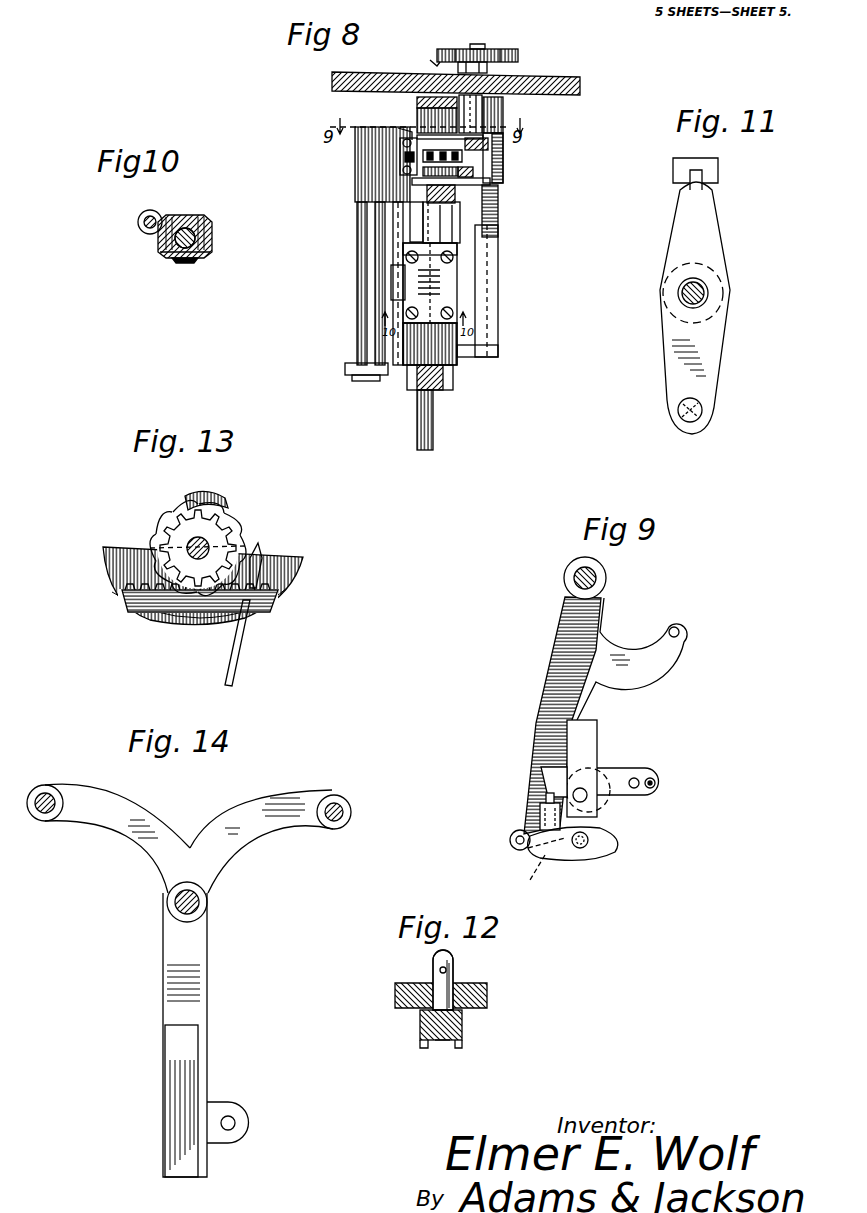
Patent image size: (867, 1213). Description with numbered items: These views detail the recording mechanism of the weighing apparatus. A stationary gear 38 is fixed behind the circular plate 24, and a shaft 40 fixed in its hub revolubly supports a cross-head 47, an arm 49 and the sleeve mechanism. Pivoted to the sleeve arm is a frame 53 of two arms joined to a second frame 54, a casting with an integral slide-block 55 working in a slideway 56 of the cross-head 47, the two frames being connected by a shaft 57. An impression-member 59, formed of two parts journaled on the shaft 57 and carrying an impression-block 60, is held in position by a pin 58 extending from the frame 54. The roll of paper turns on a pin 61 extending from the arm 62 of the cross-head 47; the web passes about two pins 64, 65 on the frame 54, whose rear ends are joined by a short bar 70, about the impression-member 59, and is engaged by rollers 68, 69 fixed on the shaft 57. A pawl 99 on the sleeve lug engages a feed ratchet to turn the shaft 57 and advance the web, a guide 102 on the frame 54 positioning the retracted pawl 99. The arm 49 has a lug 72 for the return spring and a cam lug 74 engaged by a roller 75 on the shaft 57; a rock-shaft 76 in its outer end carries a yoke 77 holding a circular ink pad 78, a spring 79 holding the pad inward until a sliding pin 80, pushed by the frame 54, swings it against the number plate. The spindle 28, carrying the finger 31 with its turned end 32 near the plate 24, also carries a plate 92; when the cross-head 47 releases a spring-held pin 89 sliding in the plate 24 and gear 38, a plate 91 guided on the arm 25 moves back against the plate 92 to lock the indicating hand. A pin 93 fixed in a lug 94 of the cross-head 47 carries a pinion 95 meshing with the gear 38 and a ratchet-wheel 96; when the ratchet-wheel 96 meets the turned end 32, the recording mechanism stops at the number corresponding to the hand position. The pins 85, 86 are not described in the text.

In FIG. 13, the circular plate 24 is at (285, 562).
In FIG. 11, the arm 25 is at (712, 177).
In FIG. 11, the spindle 28 is at (708, 293).
In FIG. 13, the finger 31 is at (233, 655).
In FIG. 13, the turned end 32 is at (258, 546).
In FIG. 8, the stationary gear 38 is at (581, 88).
In FIG. 13, the stationary gear 38 is at (160, 608).
In FIG. 9, the shaft 40 is at (600, 577).
In FIG. 14, the shaft 40 is at (207, 902).
In FIG. 8, the cross-head 47 is at (457, 134).
In FIG. 14, the cross-head 47 is at (207, 940).
In FIG. 12, the cross-head 47 is at (462, 1036).
In FIG. 8, the arm 49 is at (503, 165).
In FIG. 9, the arm 49 is at (536, 737).
In FIG. 8, the frame 53 is at (495, 395).
In FIG. 8, the frame 54 is at (548, 195).
In FIG. 9, the frame 54 is at (620, 768).
In FIG. 8, the slide-block 55 is at (417, 114).
In FIG. 9, the slide-block 55 is at (597, 735).
In FIG. 14, the slideway 56 is at (198, 1160).
In FIG. 12, the slideway 56 is at (440, 1048).
In FIG. 8, the shaft 57 is at (433, 420).
In FIG. 10, the shaft 57 is at (212, 240).
In FIG. 9, the shaft 57 is at (586, 797).
In FIG. 8, the pin 58 is at (393, 252).
In FIG. 10, the pin 58 is at (147, 230).
In FIG. 8, the impression-member 59 is at (457, 290).
In FIG. 10, the impression-member 59 is at (200, 256).
In FIG. 10, the impression-block 60 is at (185, 263).
In FIG. 14, the pin 61 is at (48, 798).
In FIG. 14, the arm 62 is at (100, 820).
In FIG. 8, the pin 64 is at (357, 333).
In FIG. 9, the pin 64 is at (656, 781).
In FIG. 8, the pin 65 is at (375, 292).
In FIG. 9, the pin 65 is at (638, 780).
In FIG. 8, the roller 68 is at (457, 250).
In FIG. 10, the roller 68 is at (185, 215).
In FIG. 8, the roller 69 is at (457, 363).
In FIG. 8, the short bar 70 is at (368, 375).
In FIG. 9, the lug 72 is at (636, 655).
In FIG. 9, the cam lug 74 is at (605, 855).
In FIG. 8, the roller 75 is at (478, 120).
In FIG. 9, the roller 75 is at (600, 808).
In FIG. 8, the rock-shaft 76 is at (498, 327).
In FIG. 9, the rock-shaft 76 is at (510, 838).
In FIG. 8, the yoke 77 is at (497, 345).
In FIG. 9, the yoke 77 is at (529, 877).
In FIG. 9, the ink pad 78 is at (580, 850).
In FIG. 8, the spring 79 is at (530, 242).
In FIG. 9, the spring 79 is at (530, 848).
In FIG. 9, the pin 80 is at (545, 805).
In FIG. 14, the pivot 85 is at (337, 806).
In FIG. 14, the arm 86 is at (250, 832).
In FIG. 12, the pin 89 is at (453, 975).
In FIG. 8, the plate 91 is at (475, 130).
In FIG. 11, the plate 91 is at (720, 350).
In FIG. 11, the plate 92 is at (705, 265).
In FIG. 8, the pin 93 is at (478, 44).
In FIG. 13, the pin 93 is at (205, 543).
In FIG. 14, the pin 93 is at (232, 1118).
In FIG. 14, the lug 94 is at (218, 1100).
In FIG. 8, the pinion 95 is at (440, 62).
In FIG. 13, the pinion 95 is at (165, 533).
In FIG. 8, the ratchet-wheel 96 is at (505, 50).
In FIG. 13, the ratchet-wheel 96 is at (185, 506).
In FIG. 8, the pawl 99 is at (400, 155).
In FIG. 8, the guide 102 is at (398, 128).